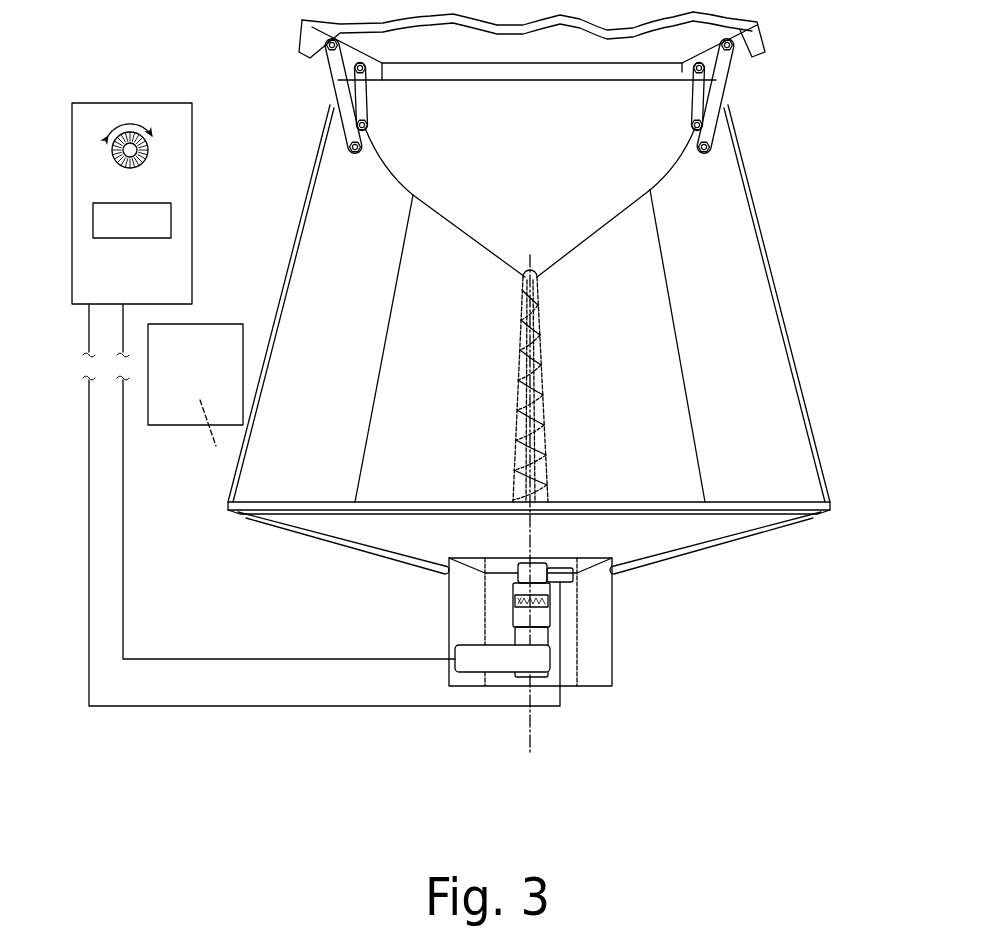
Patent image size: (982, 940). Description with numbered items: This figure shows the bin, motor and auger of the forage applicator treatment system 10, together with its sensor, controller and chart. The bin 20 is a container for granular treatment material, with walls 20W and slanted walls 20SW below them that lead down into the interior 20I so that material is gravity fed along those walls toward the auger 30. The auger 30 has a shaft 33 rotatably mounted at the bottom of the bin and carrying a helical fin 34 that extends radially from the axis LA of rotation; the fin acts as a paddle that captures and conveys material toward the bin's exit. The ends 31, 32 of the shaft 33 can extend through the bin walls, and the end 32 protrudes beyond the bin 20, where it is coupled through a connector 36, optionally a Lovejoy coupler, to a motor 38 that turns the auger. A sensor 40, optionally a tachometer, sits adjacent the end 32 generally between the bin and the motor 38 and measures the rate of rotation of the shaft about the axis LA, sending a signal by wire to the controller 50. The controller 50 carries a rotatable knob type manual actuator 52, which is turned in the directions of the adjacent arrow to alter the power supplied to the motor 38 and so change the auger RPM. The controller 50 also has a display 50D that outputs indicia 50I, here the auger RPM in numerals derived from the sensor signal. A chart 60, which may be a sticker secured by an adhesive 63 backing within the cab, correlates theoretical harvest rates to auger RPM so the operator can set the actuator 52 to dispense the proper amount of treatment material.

The system 10 is at (798, 162).
The bin 20 is at (812, 400).
The slanted walls 20SW is at (630, 390).
The walls 20W is at (765, 428).
The interior 20I is at (616, 324).
The end 31 is at (542, 188).
The auger 30 is at (512, 370).
The shaft 33 is at (528, 447).
The helical fin 34 is at (527, 424).
The end 32 is at (518, 572).
The connector 36 is at (545, 615).
The motor 38 is at (535, 662).
The sensor 40 is at (577, 577).
The controller 50 is at (193, 160).
The manual actuator 52 is at (150, 148).
The indicia 50I is at (168, 222).
The display 50D is at (173, 237).
The chart 60 is at (168, 425).
The adhesive 63 is at (200, 400).
The axis LA is at (528, 733).